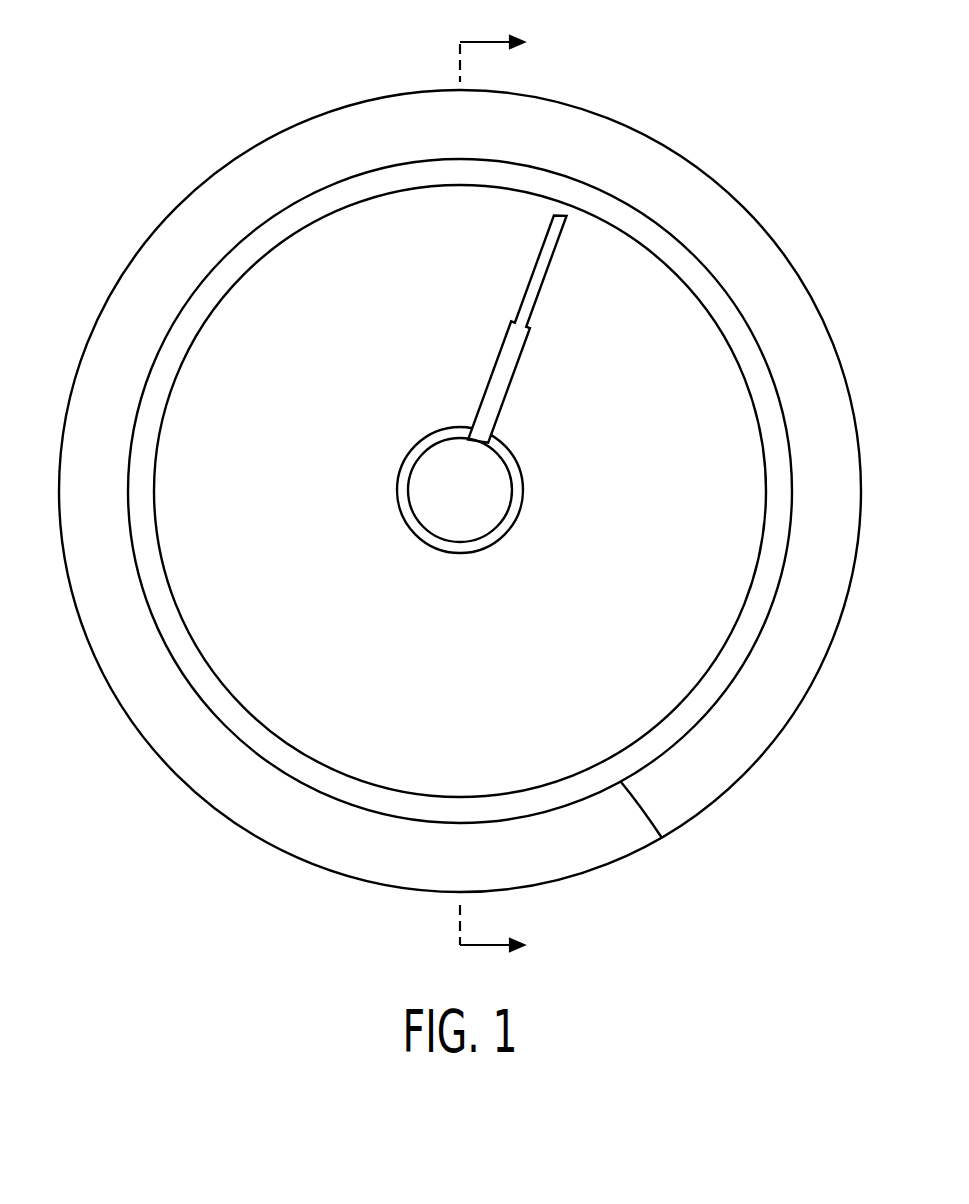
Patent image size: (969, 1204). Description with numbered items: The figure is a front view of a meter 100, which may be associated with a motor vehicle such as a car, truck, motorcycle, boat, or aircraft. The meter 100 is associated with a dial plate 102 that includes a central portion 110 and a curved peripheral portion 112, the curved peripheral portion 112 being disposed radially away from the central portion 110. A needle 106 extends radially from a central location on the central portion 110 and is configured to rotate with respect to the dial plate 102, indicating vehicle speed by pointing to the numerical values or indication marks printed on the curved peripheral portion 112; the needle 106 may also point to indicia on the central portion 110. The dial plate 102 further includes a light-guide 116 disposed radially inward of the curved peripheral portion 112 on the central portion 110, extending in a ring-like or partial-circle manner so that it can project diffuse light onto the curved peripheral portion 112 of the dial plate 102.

The meter 100 is at (452, 493).
The dial plate 102 is at (280, 691).
The needle 106 is at (513, 382).
The central portion 110 is at (487, 681).
The curved peripheral portion 112 is at (387, 863).
The light-guide 116 is at (662, 838).